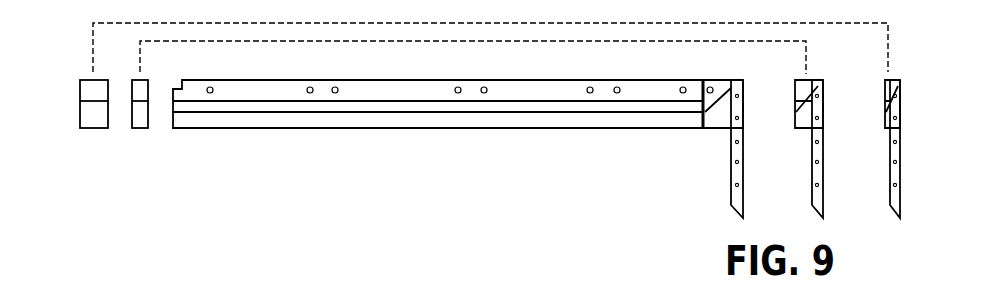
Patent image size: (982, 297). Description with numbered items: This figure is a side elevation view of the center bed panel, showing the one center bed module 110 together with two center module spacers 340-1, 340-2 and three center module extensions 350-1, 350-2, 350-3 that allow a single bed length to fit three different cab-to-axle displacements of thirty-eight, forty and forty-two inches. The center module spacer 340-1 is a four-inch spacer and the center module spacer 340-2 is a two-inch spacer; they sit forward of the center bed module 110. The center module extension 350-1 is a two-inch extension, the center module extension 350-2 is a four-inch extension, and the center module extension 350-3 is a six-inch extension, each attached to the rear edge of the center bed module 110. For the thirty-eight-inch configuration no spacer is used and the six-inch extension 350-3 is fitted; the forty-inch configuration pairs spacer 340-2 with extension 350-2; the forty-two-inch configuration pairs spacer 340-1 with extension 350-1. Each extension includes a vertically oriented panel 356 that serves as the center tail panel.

The center bed module 110 is at (223, 128).
The center module spacer 340-1 is at (80, 103).
The center module spacer 340-2 is at (149, 88).
The center module extension 350-1 is at (900, 100).
The center module extension 350-2 is at (823, 100).
The center module extension 350-3 is at (770, 72).
The vertically oriented panel 356 is at (744, 152).